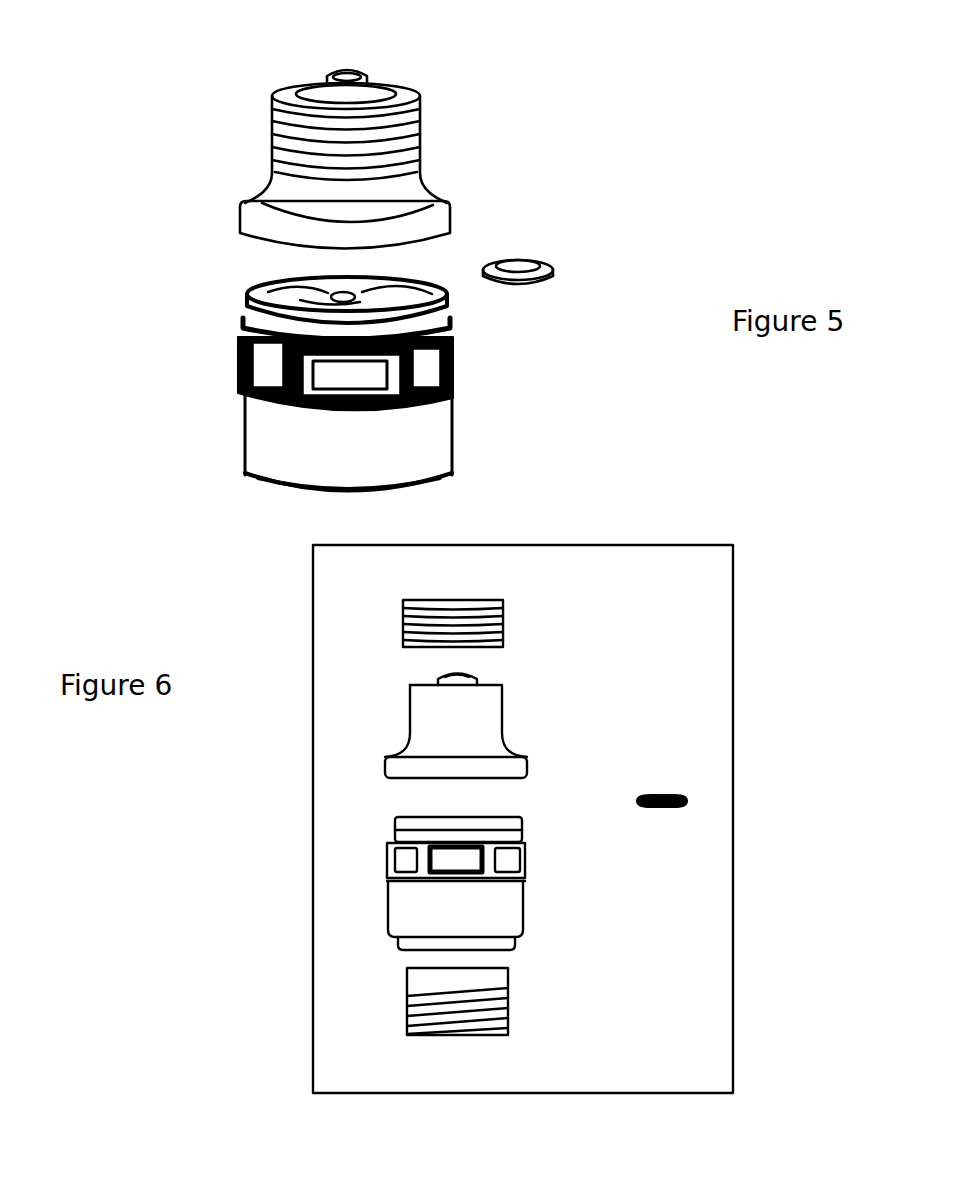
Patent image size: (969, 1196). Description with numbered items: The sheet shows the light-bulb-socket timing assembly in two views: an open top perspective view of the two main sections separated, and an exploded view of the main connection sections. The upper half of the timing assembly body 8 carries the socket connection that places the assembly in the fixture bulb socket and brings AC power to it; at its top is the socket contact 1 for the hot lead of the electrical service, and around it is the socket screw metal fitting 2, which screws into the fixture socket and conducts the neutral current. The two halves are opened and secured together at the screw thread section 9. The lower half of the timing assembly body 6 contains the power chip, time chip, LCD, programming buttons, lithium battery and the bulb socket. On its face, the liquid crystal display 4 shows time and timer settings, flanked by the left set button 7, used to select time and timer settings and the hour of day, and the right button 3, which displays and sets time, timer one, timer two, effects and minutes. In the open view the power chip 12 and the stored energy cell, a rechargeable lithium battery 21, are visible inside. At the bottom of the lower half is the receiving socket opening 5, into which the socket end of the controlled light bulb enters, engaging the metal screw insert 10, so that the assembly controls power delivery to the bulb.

In FIG. 5, the socket contact 1 is at (362, 62).
In FIG. 6, the socket contact 1 is at (473, 666).
In FIG. 5, the socket screw metal fitting 2 is at (408, 139).
In FIG. 6, the socket screw metal fitting 2 is at (516, 617).
In FIG. 5, the right button 3 is at (453, 356).
In FIG. 6, the right button 3 is at (528, 863).
In FIG. 5, the liquid crystal display 4 is at (425, 405).
In FIG. 6, the liquid crystal display 4 is at (472, 866).
In FIG. 5, the receiving socket opening 5 is at (294, 511).
In FIG. 6, the receiving socket opening 5 is at (510, 966).
In FIG. 5, the lower half of timing assembly body 6 is at (254, 450).
In FIG. 6, the lower half of timing assembly body 6 is at (385, 916).
In FIG. 5, the left set button 7 is at (241, 379).
In FIG. 6, the left set button 7 is at (356, 856).
In FIG. 5, the upper half of timing assembly body 8 is at (268, 176).
In FIG. 6, the upper half of timing assembly body 8 is at (398, 718).
In FIG. 5, the screw thread section 9 is at (246, 321).
In FIG. 6, the screw thread section 9 is at (388, 830).
In FIG. 6, the metal screw insert 10 is at (398, 1028).
In FIG. 5, the power chip 12 is at (296, 280).
In FIG. 5, the rechargeable lithium battery 21 is at (522, 256).
In FIG. 6, the rechargeable lithium battery 21 is at (674, 818).